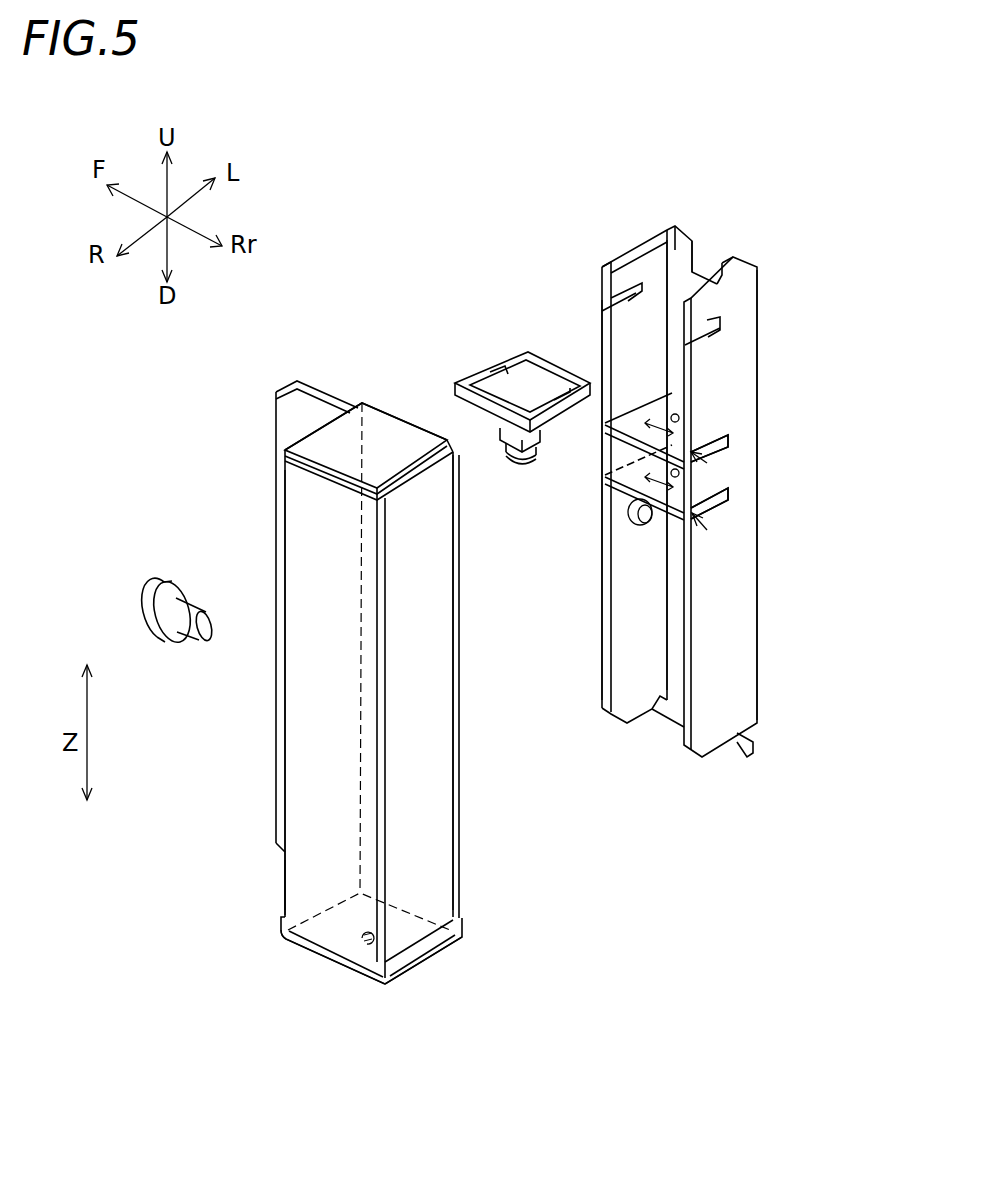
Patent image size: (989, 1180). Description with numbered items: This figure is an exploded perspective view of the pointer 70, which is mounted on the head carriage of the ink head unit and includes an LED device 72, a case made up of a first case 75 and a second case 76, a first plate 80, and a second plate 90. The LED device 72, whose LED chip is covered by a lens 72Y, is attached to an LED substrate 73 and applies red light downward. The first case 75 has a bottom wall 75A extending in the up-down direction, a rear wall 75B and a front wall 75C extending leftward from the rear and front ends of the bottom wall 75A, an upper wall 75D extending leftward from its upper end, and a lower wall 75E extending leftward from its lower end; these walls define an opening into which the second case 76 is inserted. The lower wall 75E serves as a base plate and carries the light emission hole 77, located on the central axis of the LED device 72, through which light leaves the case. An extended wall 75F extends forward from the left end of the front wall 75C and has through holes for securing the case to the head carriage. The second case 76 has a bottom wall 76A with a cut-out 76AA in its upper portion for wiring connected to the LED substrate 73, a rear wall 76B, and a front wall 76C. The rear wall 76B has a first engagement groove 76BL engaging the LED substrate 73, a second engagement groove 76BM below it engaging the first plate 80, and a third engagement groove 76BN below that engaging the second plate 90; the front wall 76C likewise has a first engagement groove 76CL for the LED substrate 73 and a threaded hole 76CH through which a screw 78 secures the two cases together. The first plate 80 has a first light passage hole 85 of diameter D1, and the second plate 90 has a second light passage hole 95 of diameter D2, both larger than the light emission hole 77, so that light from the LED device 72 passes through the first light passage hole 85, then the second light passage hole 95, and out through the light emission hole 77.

The pointer 70 is at (742, 156).
The LED device 72 is at (520, 468).
The lens 72Y is at (530, 466).
The LED substrate 73 is at (510, 382).
The first case 75 is at (470, 880).
The bottom wall 75A is at (318, 878).
The rear wall 75B is at (445, 773).
The front wall 75C is at (280, 702).
The upper wall 75D is at (375, 430).
The lower wall 75E is at (308, 953).
The extended wall 75F is at (292, 400).
The second case 76 is at (758, 672).
The bottom wall 76A is at (667, 242).
The cut-out 76AA is at (690, 256).
The rear wall 76B is at (748, 302).
The first engagement groove 76BL is at (722, 324).
The second engagement groove 76BM is at (728, 438).
The third engagement groove 76BN is at (718, 502).
The front wall 76C is at (632, 322).
The first engagement groove 76CL is at (638, 285).
The threaded hole 76CH is at (636, 530).
The light emission hole 77 is at (366, 942).
The screw 78 is at (175, 581).
The first plate 80 is at (712, 468).
The first light passage hole 85 is at (678, 416).
The second plate 90 is at (713, 531).
The second light passage hole 95 is at (680, 473).
The diameter D1 is at (648, 426).
The diameter D2 is at (648, 479).